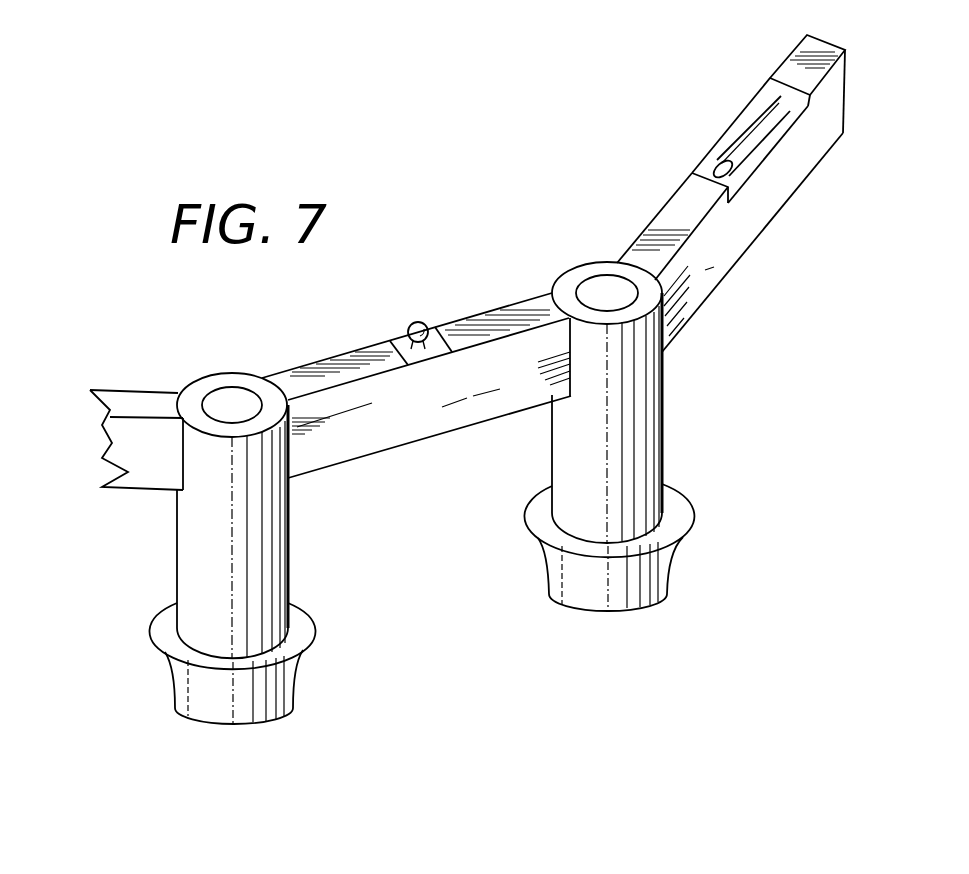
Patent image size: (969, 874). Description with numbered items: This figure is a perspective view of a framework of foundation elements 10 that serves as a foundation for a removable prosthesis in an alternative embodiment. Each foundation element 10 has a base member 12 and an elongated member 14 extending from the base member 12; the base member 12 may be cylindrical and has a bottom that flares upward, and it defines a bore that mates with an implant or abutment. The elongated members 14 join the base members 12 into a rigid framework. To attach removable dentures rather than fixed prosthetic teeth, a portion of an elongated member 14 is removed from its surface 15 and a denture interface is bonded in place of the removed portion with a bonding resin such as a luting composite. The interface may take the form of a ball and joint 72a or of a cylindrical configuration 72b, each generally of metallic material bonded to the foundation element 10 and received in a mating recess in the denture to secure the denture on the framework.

The foundation element 10 is at (694, 443).
The base member 12 is at (281, 561).
The elongated member 14 is at (387, 433).
The surface 15 is at (327, 378).
The ball and joint 72a is at (418, 322).
The cylindrical configuration 72b is at (738, 150).